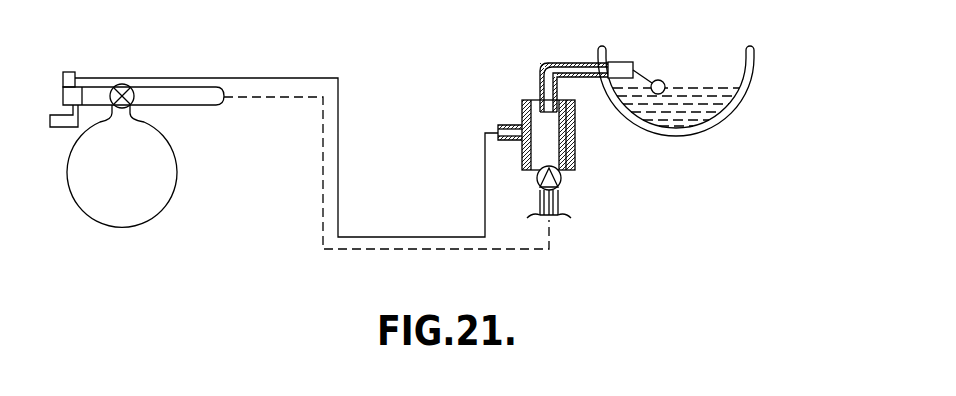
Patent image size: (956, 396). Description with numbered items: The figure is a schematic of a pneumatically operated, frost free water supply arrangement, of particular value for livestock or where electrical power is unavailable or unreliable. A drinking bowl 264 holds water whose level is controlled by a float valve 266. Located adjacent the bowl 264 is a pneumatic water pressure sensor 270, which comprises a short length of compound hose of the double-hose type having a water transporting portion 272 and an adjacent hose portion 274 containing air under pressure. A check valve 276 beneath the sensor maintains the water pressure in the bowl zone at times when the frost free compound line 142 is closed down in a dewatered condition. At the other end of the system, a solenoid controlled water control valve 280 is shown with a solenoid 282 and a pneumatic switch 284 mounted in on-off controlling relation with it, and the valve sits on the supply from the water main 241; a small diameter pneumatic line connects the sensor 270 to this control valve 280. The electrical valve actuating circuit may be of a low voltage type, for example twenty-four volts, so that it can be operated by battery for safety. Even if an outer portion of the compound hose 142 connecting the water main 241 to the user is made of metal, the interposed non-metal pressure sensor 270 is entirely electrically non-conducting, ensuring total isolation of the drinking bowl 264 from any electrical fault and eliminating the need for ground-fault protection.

The frost free compound line 142 is at (415, 249).
The water main 241 is at (176, 178).
The drinking bowl 264 is at (750, 67).
The float valve 266 is at (634, 64).
The pneumatic water pressure sensor 270 is at (499, 100).
The water transporting portion 272 is at (575, 137).
The adjacent hose portion 274 is at (553, 140).
The check valve 276 is at (561, 183).
The solenoid controlled water control valve 280 is at (78, 84).
The solenoid 282 is at (88, 86).
The pneumatic switch 284 is at (70, 72).